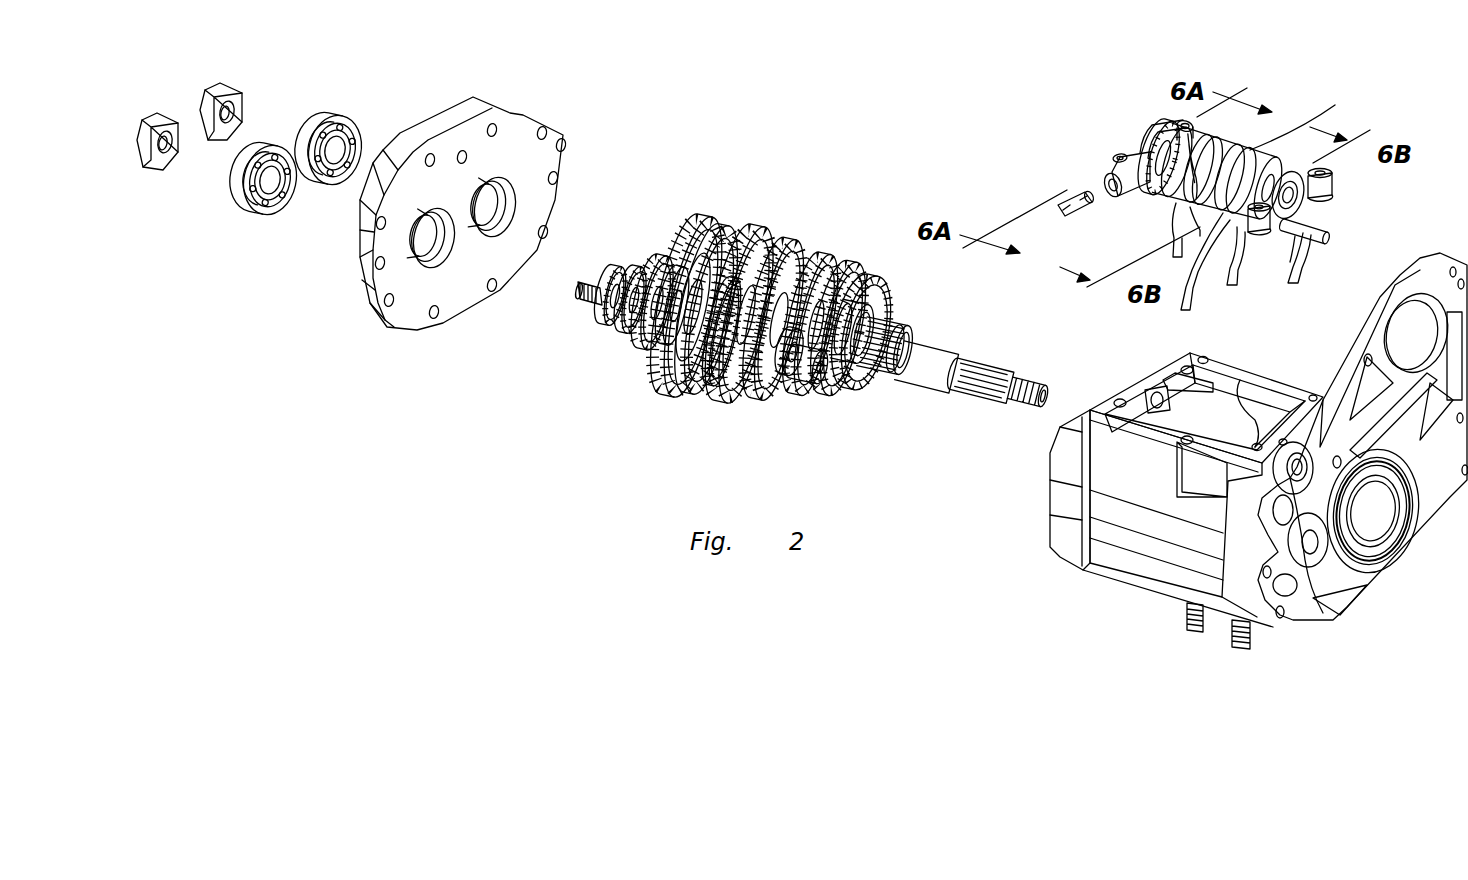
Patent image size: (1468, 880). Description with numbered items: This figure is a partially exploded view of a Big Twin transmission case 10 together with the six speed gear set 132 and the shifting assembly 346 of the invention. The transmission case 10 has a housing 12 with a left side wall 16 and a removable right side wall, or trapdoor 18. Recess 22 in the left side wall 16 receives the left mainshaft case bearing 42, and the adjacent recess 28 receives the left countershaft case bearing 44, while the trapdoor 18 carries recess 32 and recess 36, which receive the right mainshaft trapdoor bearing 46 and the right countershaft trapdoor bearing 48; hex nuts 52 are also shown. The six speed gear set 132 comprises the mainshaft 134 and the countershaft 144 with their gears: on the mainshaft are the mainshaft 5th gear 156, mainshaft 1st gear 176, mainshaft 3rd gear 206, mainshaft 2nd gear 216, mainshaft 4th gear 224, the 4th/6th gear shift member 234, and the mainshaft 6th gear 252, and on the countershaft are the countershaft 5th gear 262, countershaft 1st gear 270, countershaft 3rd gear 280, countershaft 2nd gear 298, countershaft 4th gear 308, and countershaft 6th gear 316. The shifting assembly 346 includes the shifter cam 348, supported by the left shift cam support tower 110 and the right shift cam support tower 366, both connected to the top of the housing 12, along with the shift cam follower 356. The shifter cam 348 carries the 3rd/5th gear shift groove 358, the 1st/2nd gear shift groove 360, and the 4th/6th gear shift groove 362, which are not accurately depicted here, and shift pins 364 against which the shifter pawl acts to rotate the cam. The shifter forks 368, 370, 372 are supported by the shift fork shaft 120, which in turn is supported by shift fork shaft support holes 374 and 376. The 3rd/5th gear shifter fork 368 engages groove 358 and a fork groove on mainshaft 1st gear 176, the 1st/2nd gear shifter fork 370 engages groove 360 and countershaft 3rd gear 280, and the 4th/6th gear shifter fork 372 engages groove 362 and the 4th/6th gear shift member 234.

The transmission case 10 is at (1259, 470).
The housing 12 is at (1186, 500).
The left side wall 16 is at (1350, 461).
The trapdoor 18 is at (450, 205).
The recess 22 is at (1370, 557).
The recess 28 is at (1297, 562).
The recess 32 is at (498, 212).
The recess 36 is at (438, 243).
The left mainshaft case bearing 42 is at (1370, 575).
The left countershaft case bearing 44 is at (1323, 613).
The right mainshaft trapdoor bearing 46 is at (333, 113).
The right countershaft trapdoor bearing 48 is at (252, 213).
The hex nuts 52 is at (156, 170).
The left shift cam support tower 110 is at (1303, 205).
The shift fork shaft 120 is at (1330, 235).
The six speed gear set 132 is at (833, 203).
The mainshaft 134 is at (996, 353).
The countershaft 144 is at (807, 383).
The mainshaft 5th gear 156 is at (880, 275).
The mainshaft 1st gear 176 is at (855, 255).
The mainshaft 3rd gear 206 is at (828, 247).
The mainshaft 2nd gear 216 is at (778, 220).
The mainshaft 4th gear 224 is at (742, 226).
The 4th/6th gear shift member 234 is at (692, 213).
The mainshaft 6th gear 252 is at (676, 215).
The countershaft 5th gear 262 is at (783, 383).
The countershaft 1st gear 270 is at (723, 410).
The countershaft 3rd gear 280 is at (683, 385).
The countershaft 2nd gear 298 is at (655, 370).
The countershaft 4th gear 308 is at (634, 350).
The countershaft 6th gear 316 is at (604, 330).
The shifting assembly 346 is at (1220, 190).
The shifter cam 348 is at (1247, 150).
The shift cam follower 356 is at (1077, 217).
The 3rd/5th gear shift groove 358 is at (1157, 117).
The 1st/2nd gear shift groove 360 is at (1157, 200).
The 4th/6th gear shift groove 362 is at (1267, 125).
The shift pins 364 is at (1320, 160).
The right shift cam support tower 366 is at (1141, 145).
The 3rd/5th gear shifter fork 368 is at (1320, 260).
The 1st/2nd gear shifter fork 370 is at (1247, 255).
The 4th/6th gear shifter fork 372 is at (1177, 230).
The shift fork shaft support hole 374 is at (1235, 483).
The shift fork shaft support hole 376 is at (1152, 396).